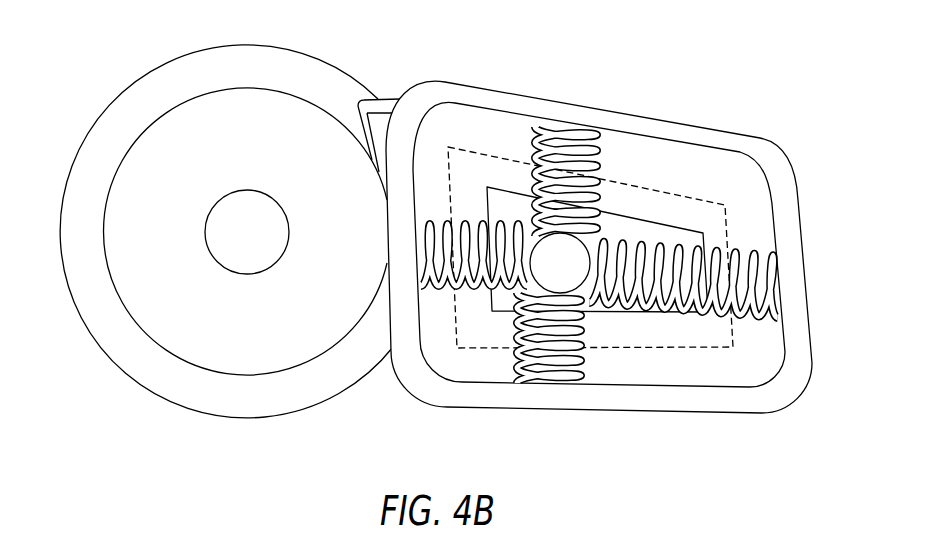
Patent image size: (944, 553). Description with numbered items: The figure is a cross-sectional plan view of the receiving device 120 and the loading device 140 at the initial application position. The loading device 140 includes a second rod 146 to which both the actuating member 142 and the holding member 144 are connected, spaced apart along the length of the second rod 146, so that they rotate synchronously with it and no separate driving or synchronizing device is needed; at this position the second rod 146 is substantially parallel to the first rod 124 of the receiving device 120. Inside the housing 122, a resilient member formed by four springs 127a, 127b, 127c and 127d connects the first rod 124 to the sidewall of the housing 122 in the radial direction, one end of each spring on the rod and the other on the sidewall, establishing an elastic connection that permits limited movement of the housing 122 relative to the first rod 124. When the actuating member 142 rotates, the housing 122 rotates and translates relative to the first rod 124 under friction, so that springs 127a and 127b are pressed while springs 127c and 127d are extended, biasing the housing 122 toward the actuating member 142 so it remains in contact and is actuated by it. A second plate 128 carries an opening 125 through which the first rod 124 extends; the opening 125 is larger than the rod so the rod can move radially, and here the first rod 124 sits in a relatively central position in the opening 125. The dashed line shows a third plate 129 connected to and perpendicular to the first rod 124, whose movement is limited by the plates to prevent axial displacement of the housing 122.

The receiving device 120 is at (606, 262).
The housing 122 is at (702, 141).
The first rod 124 is at (565, 283).
The opening 125 is at (677, 311).
The spring 127a is at (551, 128).
The spring 127b is at (480, 290).
The spring 127c is at (537, 382).
The spring 127d is at (750, 247).
The second plate 128 is at (648, 373).
The third plate 129 is at (683, 222).
The loading device 140 is at (221, 231).
The actuating member 142 is at (150, 312).
The holding member 144 is at (243, 405).
The second rod 146 is at (211, 222).